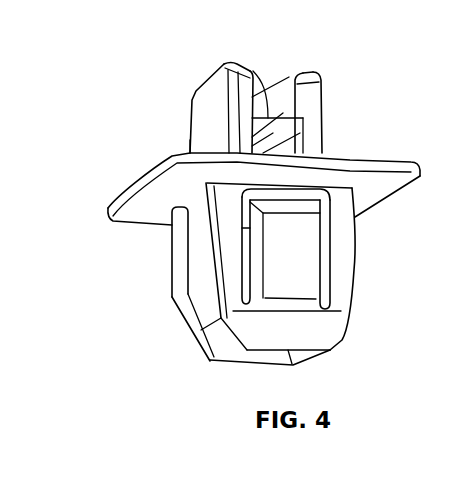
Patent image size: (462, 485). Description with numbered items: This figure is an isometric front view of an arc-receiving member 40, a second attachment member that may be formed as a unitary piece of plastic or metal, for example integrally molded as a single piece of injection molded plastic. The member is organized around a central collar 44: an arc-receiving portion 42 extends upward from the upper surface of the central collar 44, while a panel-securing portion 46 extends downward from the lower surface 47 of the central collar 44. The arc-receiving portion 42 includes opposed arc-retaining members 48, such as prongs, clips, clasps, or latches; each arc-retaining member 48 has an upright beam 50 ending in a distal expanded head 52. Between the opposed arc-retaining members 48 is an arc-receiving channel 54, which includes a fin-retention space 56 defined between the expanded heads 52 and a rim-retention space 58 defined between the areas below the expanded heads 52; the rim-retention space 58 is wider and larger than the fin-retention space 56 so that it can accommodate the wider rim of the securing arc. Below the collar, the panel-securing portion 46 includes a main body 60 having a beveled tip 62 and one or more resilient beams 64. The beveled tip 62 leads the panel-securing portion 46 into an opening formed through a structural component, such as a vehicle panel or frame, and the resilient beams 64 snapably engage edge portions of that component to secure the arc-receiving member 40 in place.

The arc-receiving member 40 is at (125, 101).
The arc-receiving portion 42 is at (348, 95).
The central collar 44 is at (413, 163).
The panel-securing portion 46 is at (353, 308).
The lower surface 47 is at (380, 196).
The arc-retaining members 48 is at (211, 81).
The upright beam 50 is at (190, 127).
The expanded head 52 is at (253, 73).
The arc-receiving channel 54 is at (180, 231).
The fin-retention space 56 is at (276, 100).
The rim-retention space 58 is at (180, 231).
The main body 60 is at (175, 298).
The beveled tip 62 is at (207, 361).
The resilient beams 64 is at (303, 242).